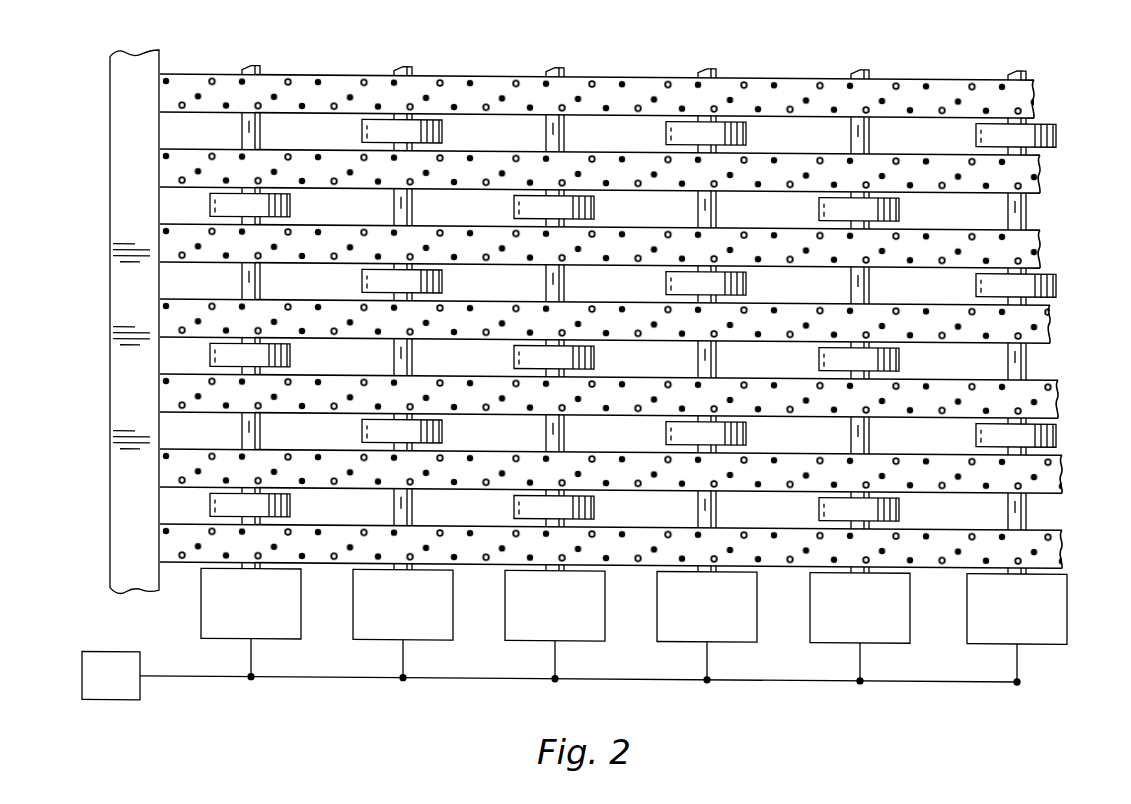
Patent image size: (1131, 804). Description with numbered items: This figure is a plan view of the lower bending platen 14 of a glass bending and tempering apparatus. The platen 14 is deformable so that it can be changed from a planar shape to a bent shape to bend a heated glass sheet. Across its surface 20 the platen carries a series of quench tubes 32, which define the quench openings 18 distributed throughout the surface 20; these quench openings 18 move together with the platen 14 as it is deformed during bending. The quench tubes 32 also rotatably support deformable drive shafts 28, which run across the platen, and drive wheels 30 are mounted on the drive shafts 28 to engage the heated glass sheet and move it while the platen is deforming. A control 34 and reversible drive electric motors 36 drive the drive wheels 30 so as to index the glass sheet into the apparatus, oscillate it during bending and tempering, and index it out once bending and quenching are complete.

The first platen 14 is at (948, 35).
The quench openings 18 is at (437, 83).
The surface 20 is at (352, 90).
The deformable drive shafts 28 is at (1025, 207).
The drive wheels 30 is at (1028, 137).
The quench tubes 32 is at (1010, 98).
The control 34 is at (128, 693).
The reversible drive electric motors 36 is at (437, 633).